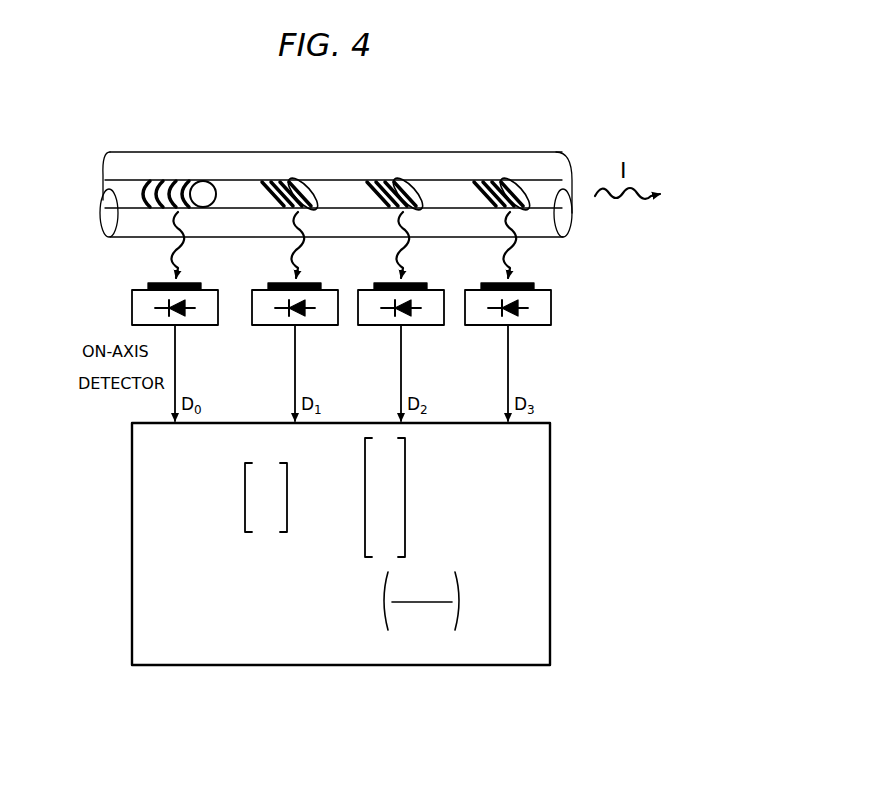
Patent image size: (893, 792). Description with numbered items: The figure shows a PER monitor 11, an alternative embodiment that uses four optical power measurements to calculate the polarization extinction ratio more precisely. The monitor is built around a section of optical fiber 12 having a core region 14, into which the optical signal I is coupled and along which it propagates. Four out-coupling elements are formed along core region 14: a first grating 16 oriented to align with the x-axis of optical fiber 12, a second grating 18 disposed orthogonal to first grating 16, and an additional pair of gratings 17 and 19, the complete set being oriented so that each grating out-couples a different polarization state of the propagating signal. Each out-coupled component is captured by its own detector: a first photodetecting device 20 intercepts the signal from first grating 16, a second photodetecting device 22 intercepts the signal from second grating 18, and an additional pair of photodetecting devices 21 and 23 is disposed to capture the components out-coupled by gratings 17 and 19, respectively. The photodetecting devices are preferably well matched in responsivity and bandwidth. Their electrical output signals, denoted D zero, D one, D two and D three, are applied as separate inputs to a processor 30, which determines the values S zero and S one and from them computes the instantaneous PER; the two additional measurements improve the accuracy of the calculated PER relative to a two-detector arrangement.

The PER monitor 11 is at (584, 112).
The optical fiber 12 is at (119, 157).
The core region 14 is at (122, 192).
The first grating 16 is at (204, 180).
The grating 17 is at (398, 180).
The second grating 18 is at (292, 180).
The grating 19 is at (504, 180).
The first photodetecting device 20 is at (209, 291).
The photodetecting device 21 is at (435, 291).
The second photodetecting device 22 is at (329, 291).
The photodetecting device 23 is at (542, 291).
The processor 30 is at (132, 548).